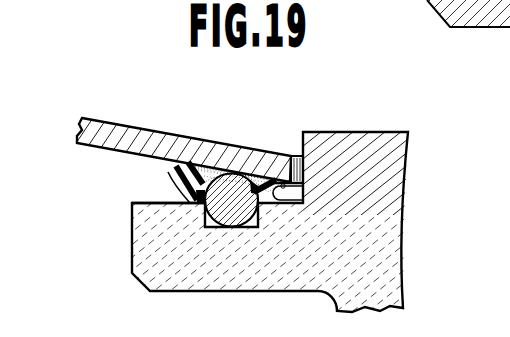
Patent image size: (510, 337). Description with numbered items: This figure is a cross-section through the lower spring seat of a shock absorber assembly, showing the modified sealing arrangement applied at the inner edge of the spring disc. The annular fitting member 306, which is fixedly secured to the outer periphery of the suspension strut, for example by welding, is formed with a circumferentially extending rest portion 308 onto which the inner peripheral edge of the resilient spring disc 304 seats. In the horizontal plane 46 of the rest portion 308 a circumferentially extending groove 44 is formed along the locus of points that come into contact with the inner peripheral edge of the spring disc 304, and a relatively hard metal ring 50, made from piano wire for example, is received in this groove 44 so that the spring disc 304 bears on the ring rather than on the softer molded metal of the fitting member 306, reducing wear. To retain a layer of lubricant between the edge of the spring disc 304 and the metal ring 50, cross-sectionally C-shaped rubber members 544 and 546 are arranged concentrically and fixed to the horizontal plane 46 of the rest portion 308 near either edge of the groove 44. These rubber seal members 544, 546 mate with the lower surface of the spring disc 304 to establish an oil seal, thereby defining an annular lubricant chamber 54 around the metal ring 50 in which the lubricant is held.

The spring disc 304 is at (113, 127).
The rubber member 544 is at (193, 165).
The annular lubricant chamber 54 is at (222, 157).
The rest portion 308 is at (160, 178).
The horizontal plane 46 is at (147, 205).
The rubber member 546 is at (307, 190).
The fitting member 306 is at (385, 248).
The groove 44 is at (205, 229).
The metal ring 50 is at (236, 217).